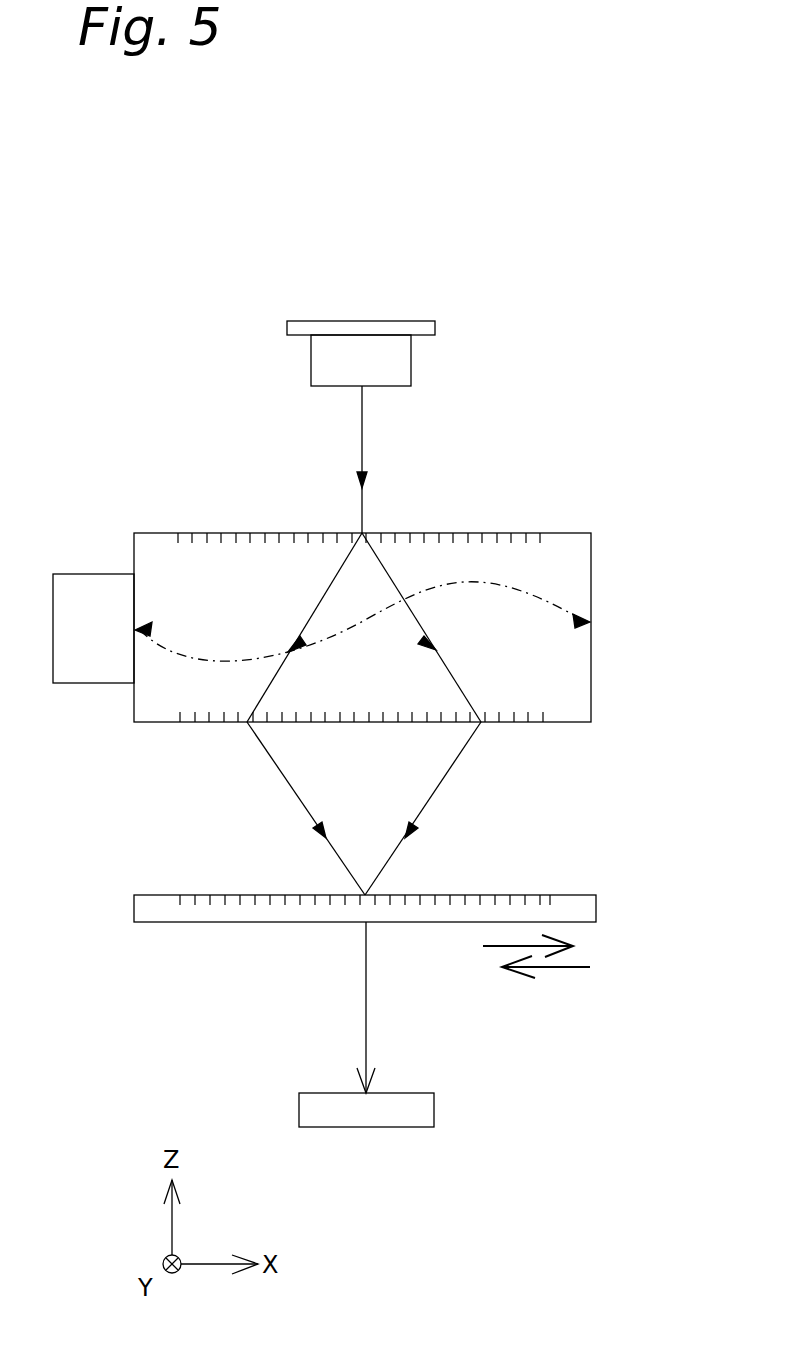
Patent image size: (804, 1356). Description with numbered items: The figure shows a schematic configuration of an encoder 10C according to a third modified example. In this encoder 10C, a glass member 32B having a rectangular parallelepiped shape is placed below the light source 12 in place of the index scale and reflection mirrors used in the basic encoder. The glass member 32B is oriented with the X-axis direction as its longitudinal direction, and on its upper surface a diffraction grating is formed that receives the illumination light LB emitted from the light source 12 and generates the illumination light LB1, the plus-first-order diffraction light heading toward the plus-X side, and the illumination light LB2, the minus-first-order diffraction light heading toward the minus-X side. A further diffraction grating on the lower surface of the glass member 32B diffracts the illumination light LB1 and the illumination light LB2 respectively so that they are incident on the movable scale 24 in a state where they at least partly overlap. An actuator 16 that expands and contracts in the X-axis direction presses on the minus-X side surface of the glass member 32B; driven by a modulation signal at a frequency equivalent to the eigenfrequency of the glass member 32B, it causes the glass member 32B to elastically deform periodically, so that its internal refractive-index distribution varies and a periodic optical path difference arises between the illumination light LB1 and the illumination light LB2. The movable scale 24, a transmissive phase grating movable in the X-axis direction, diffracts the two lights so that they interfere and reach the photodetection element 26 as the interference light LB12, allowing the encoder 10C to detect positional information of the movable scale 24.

The encoder 10C is at (710, 118).
The light source 12 is at (361, 317).
The illumination light LB is at (405, 459).
The glass member 32B is at (417, 627).
The actuator 16 is at (77, 594).
The illumination light LB1 is at (458, 808).
The illumination light LB2 is at (264, 808).
The movable scale 24 is at (411, 921).
The interference light LB12 is at (427, 1007).
The photodetection element 26 is at (416, 1101).